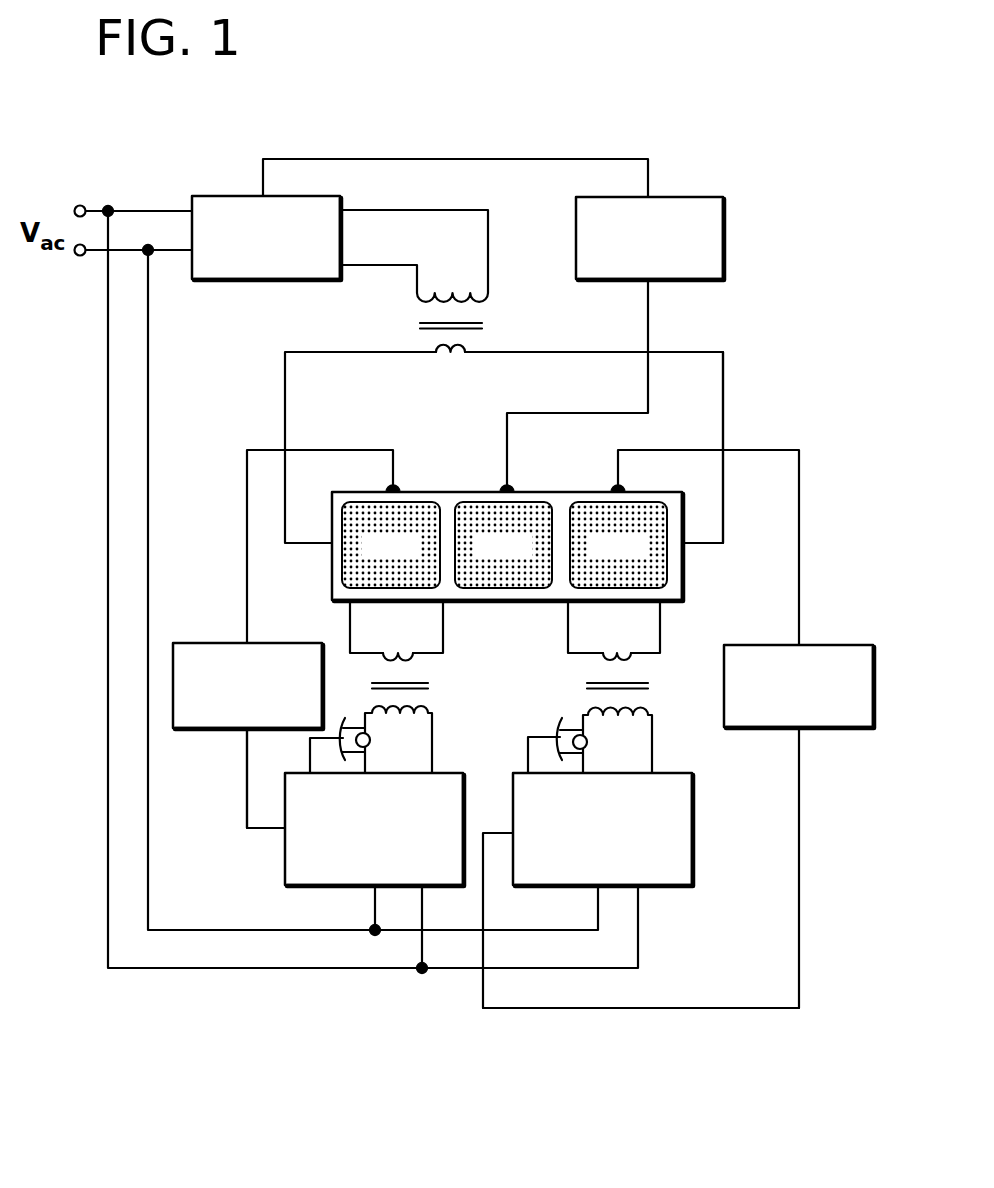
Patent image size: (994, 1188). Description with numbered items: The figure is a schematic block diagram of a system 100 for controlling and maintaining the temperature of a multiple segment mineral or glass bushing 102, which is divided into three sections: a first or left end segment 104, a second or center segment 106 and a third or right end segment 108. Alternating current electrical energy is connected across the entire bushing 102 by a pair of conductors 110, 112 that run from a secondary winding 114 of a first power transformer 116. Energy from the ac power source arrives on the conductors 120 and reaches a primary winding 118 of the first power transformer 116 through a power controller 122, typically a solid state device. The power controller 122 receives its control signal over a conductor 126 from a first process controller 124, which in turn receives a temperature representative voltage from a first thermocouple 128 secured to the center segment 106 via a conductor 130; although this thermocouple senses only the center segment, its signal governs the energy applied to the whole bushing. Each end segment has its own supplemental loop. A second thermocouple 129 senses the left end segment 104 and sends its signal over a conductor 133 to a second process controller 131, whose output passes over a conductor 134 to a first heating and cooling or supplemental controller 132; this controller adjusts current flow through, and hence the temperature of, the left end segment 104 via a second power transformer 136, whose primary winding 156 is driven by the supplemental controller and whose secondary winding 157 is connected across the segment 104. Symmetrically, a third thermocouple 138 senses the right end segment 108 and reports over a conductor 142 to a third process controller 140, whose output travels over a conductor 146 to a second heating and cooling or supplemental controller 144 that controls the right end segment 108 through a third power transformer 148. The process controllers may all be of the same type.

The system 100 is at (700, 140).
The bushing 102 is at (507, 495).
The first or left end segment 104 is at (391, 545).
The second or center segment 106 is at (503, 545).
The third or right end segment 108 is at (618, 545).
The conductor 110 is at (285, 400).
The conductor 112 is at (723, 385).
The secondary winding 114 is at (470, 340).
The first power transformer 116 is at (405, 322).
The primary winding 118 is at (445, 290).
The conductors 120 is at (148, 497).
The power controller 122 is at (225, 196).
The first process controller 124 is at (723, 232).
The conductor 126 is at (470, 158).
The first thermocouple 128 is at (507, 488).
The second thermocouple 129 is at (393, 488).
The conductor 130 is at (648, 312).
The second process controller 131 is at (225, 643).
The first heating and cooling or supplemental controller 132 is at (283, 843).
The conductor 133 is at (247, 500).
The conductor 134 is at (247, 778).
The second power transformer 136 is at (445, 682).
The third thermocouple 138 is at (618, 488).
The third process controller 140 is at (820, 645).
The conductor 142 is at (799, 545).
The second heating and cooling or supplemental controller 144 is at (692, 833).
The conductor 146 is at (799, 965).
The third power transformer 148 is at (572, 685).
The primary winding 156 is at (428, 700).
The secondary winding 157 is at (395, 655).